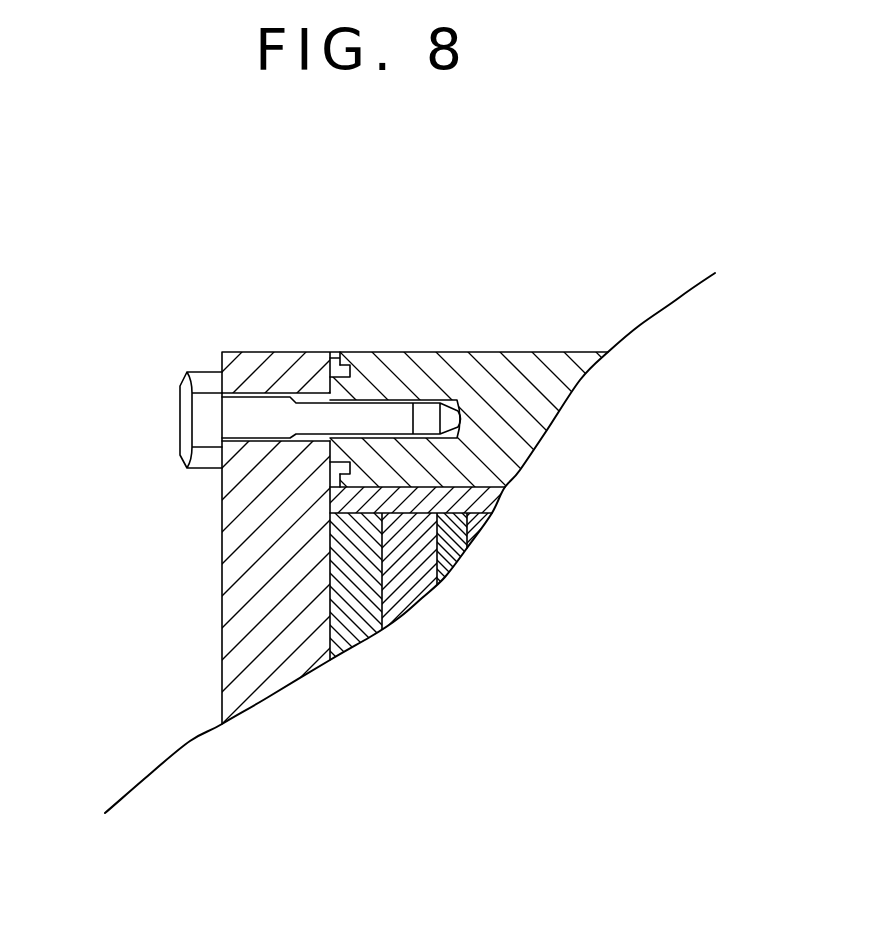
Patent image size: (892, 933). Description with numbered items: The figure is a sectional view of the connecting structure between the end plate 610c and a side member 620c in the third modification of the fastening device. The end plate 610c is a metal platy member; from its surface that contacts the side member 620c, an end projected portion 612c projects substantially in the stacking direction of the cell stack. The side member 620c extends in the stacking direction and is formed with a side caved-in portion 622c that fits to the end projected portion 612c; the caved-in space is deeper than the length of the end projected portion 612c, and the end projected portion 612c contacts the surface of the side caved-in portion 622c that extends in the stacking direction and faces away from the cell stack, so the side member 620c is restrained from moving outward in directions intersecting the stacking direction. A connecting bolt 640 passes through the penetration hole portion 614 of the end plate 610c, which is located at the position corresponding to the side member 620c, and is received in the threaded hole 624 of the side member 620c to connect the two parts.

The end plate 610c is at (250, 352).
The end projected portion 612c is at (336, 352).
The penetration hole portion 614 is at (265, 400).
The side member 620c is at (523, 373).
The side caved-in portion 622c is at (351, 357).
The threaded hole 624 is at (462, 400).
The connecting bolt 640 is at (180, 418).